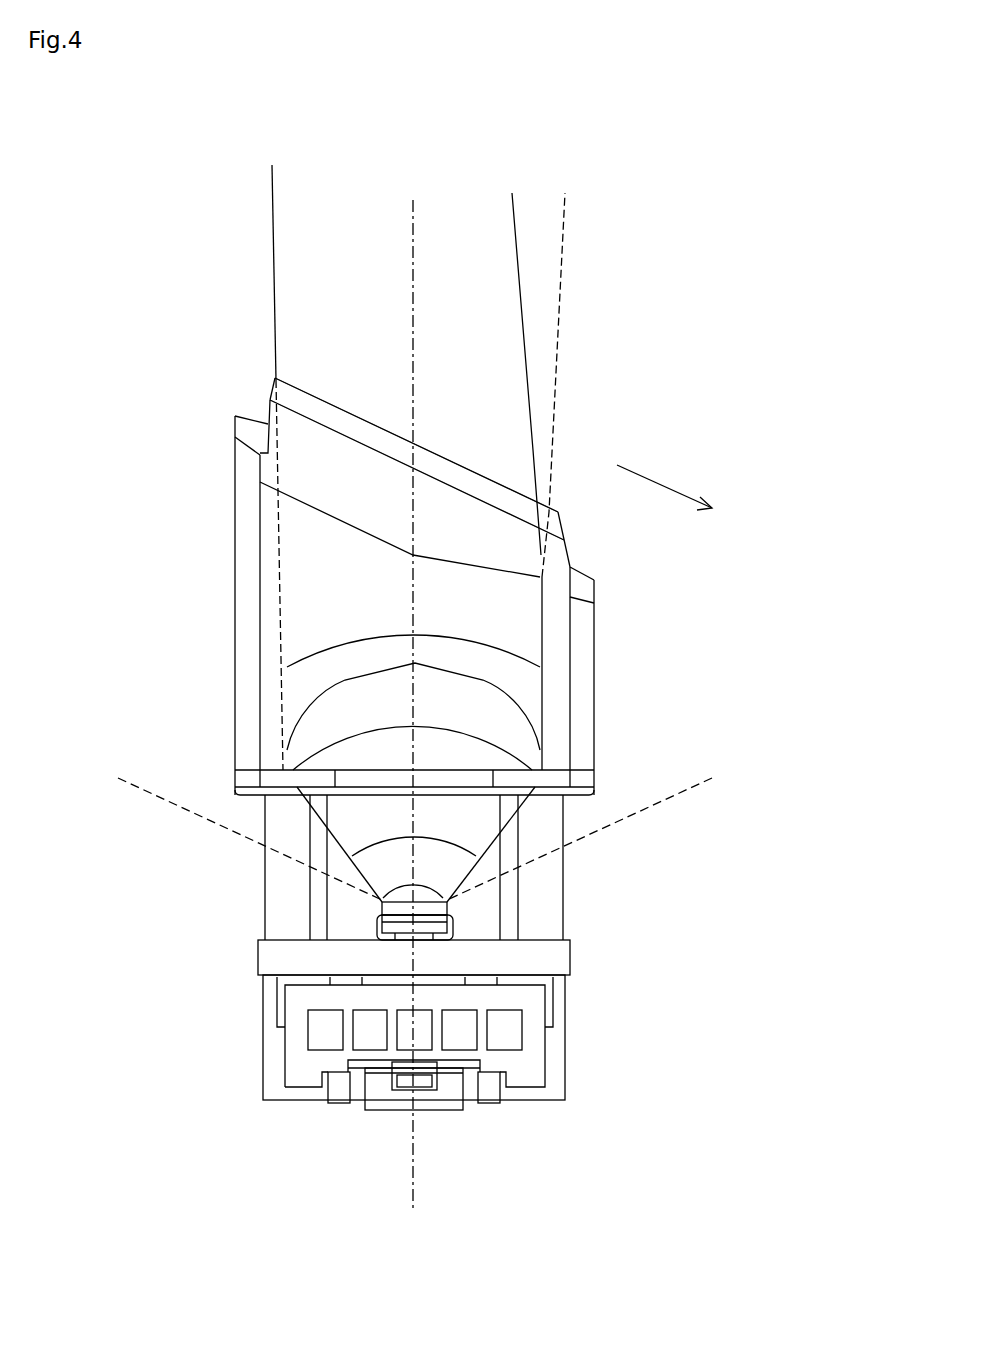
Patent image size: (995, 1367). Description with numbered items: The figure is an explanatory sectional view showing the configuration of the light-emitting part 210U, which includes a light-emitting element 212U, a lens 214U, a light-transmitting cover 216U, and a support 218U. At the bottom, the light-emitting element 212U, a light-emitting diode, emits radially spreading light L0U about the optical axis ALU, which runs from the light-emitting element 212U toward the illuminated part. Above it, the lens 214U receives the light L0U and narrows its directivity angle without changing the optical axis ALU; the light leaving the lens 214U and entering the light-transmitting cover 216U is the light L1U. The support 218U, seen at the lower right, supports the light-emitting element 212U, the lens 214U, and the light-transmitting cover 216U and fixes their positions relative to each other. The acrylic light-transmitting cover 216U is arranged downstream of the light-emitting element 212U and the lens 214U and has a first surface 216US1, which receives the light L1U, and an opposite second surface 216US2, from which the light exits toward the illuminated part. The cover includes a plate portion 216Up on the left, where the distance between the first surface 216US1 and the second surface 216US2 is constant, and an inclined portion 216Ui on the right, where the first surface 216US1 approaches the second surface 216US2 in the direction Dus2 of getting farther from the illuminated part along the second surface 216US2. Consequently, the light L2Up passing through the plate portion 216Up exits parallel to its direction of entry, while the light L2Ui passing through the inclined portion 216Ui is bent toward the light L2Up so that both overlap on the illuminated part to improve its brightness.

The light-emitting part 210U is at (290, 137).
The light-emitting element 212U is at (382, 905).
The lens 214U is at (325, 692).
The light-transmitting cover 216U is at (385, 478).
The first surface 216US1 is at (313, 507).
The second surface 216US2 is at (330, 404).
The plate portion 216Up is at (360, 490).
The inclined portion 216Ui is at (502, 538).
The support 218U is at (553, 893).
The optical axis ALU is at (413, 1160).
The direction Dus2 is at (663, 483).
The light L0U is at (480, 806).
The light L1U is at (543, 328).
The light L2Up is at (307, 215).
The light L2Ui is at (472, 228).